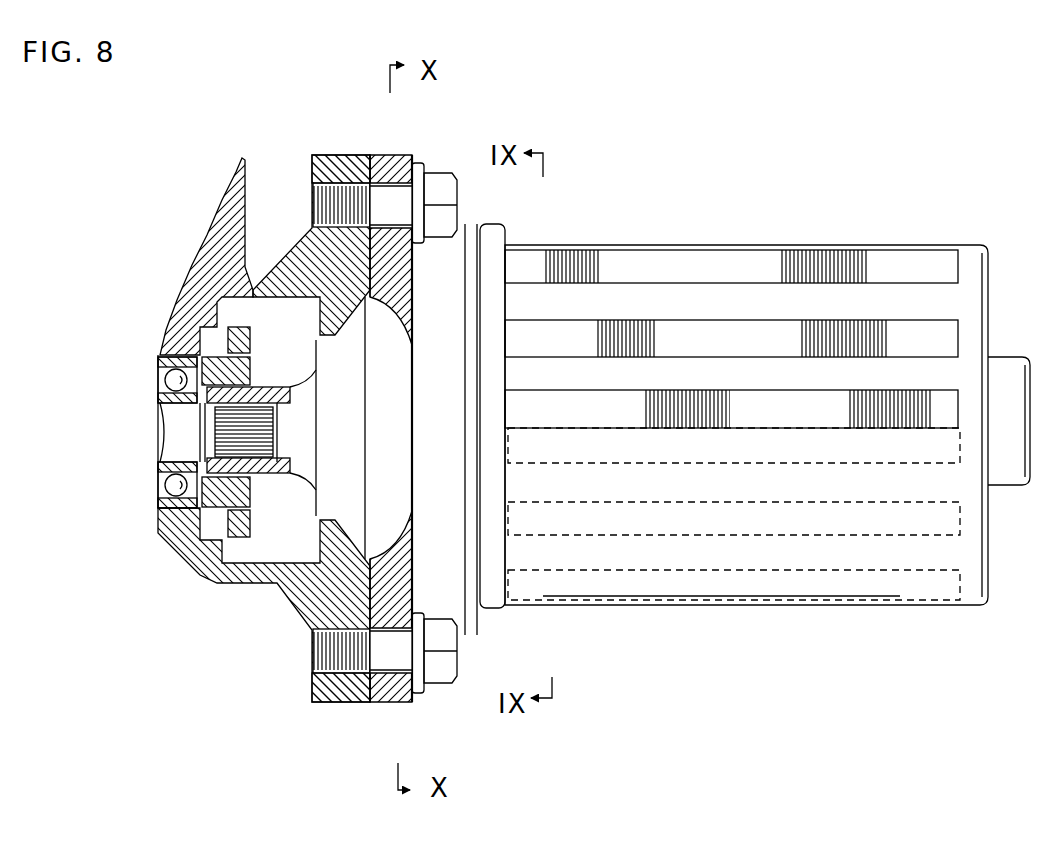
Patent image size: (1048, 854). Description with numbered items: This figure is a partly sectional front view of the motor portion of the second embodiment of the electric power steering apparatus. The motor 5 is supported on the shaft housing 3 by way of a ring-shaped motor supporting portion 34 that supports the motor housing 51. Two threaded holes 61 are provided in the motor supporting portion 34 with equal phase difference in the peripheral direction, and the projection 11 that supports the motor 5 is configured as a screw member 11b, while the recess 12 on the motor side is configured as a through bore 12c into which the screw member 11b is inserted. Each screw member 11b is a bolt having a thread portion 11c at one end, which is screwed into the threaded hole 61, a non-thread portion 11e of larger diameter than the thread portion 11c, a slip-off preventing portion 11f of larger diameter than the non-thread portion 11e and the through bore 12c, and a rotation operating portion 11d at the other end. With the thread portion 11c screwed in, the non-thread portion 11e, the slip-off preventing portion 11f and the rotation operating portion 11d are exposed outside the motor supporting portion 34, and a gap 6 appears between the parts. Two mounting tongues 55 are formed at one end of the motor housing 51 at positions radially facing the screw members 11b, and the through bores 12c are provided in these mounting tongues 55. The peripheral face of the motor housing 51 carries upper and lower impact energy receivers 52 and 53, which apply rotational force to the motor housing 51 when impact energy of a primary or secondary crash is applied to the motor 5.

The shaft housing 3 is at (188, 244).
The motor supporting portion 34 is at (310, 167).
The threaded hole 61 is at (320, 193).
The thread portion 11c is at (313, 156).
The recess 12 is at (334, 430).
The through bore 12c is at (390, 153).
The gap 6 is at (366, 151).
The mounting tongue 55 is at (417, 163).
The projection 11 is at (515, 437).
The slip-off preventing portion 11f is at (423, 168).
The screw member 11b is at (445, 168).
The rotation operating portion 11d is at (448, 187).
The non-thread portion 11e is at (402, 207).
The motor 5 is at (755, 411).
The motor housing 51 is at (637, 290).
The upper impact energy receiver 52 is at (752, 392).
The lower impact energy receiver 53 is at (813, 442).